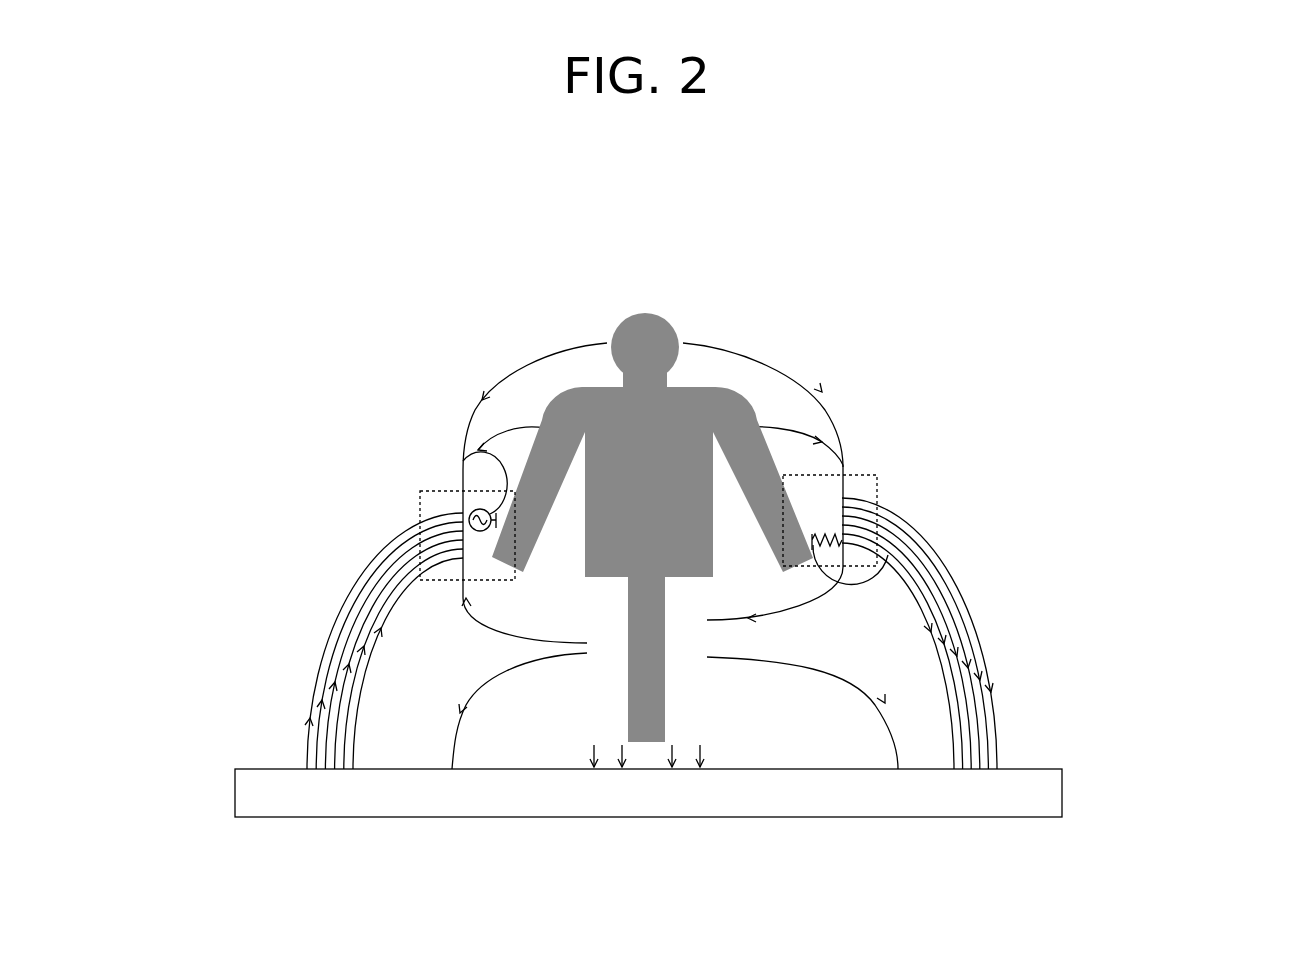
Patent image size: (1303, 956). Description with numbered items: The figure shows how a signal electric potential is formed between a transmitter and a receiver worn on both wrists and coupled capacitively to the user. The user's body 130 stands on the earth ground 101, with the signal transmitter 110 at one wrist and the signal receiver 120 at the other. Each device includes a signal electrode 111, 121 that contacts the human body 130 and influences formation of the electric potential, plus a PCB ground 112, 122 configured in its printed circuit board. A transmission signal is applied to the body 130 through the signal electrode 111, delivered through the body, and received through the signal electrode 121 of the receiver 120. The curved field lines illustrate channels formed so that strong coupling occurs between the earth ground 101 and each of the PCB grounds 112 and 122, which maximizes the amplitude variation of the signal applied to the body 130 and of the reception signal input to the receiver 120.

The earth ground 101 is at (648, 793).
The signal transmitter 110 is at (421, 513).
The signal electrode 111 is at (462, 451).
The PCB ground 112 is at (462, 513).
The signal receiver 120 is at (878, 497).
The signal electrode 121 is at (888, 562).
The PCB ground 122 is at (845, 497).
The user's body 130 is at (615, 298).